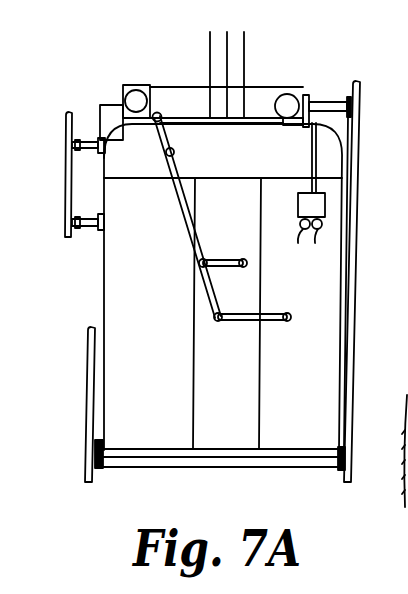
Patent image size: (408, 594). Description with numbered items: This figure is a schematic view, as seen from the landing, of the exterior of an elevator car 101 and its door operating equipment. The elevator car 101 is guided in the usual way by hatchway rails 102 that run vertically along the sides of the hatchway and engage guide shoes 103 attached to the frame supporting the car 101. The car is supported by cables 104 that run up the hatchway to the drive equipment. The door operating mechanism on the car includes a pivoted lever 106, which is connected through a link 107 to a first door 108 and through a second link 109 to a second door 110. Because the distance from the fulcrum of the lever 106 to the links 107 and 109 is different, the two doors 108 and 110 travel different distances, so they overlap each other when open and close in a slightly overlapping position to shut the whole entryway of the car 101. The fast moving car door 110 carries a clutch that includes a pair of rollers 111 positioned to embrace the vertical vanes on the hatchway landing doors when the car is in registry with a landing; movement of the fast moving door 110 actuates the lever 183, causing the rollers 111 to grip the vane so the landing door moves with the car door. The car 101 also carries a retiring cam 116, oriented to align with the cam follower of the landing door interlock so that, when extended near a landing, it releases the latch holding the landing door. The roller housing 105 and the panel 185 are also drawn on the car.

The elevator car 101 is at (227, 469).
The hatchway rails 102 is at (358, 87).
The guide shoes 103 is at (347, 100).
The cables 104 is at (249, 50).
The roller housing 105 is at (148, 86).
The pivoted lever 106 is at (176, 142).
The link 107 is at (236, 251).
The first door 108 is at (256, 213).
The second link 109 is at (283, 322).
The second door 110 is at (326, 285).
The clutch rollers 111 is at (310, 240).
The retiring cam 116 is at (66, 147).
The lever 183 is at (311, 143).
The panel body 185 is at (150, 168).